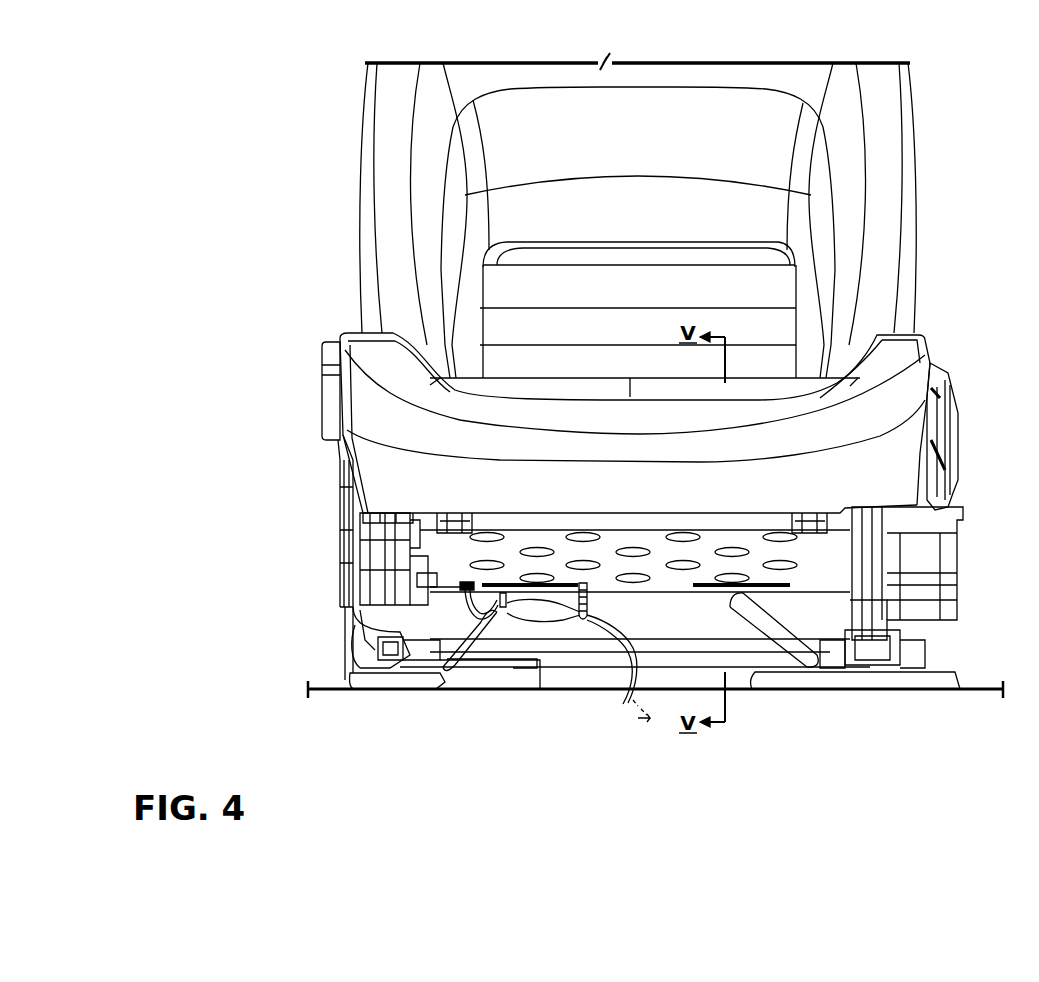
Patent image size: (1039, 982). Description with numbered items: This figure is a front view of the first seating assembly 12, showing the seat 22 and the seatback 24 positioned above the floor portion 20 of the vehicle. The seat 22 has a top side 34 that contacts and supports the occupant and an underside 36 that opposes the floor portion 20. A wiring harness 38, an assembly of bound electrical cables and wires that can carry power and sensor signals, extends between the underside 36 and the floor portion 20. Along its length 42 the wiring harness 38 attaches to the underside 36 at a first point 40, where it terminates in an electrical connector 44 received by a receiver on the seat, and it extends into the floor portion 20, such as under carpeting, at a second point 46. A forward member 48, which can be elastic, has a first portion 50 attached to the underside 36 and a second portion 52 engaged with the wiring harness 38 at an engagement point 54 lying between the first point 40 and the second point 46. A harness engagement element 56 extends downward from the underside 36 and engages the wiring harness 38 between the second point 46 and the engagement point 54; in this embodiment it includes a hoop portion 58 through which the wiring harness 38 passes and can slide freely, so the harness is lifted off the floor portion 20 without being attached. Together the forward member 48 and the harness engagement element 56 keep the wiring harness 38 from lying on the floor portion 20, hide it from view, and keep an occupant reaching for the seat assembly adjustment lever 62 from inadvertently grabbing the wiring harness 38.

The first seating assembly 12 is at (358, 158).
The floor portion 20 is at (328, 688).
The seat 22 is at (885, 358).
The seatback 24 is at (873, 158).
The top side 34 is at (750, 383).
The underside 36 is at (818, 565).
The wiring harness 38 is at (640, 648).
The first point 40 is at (415, 578).
The length 42 is at (593, 622).
The electrical connector 44 is at (460, 586).
The second point 46 is at (622, 703).
The forward member 48 is at (503, 595).
The first portion 50 is at (503, 595).
The second portion 52 is at (512, 596).
The engagement point 54 is at (518, 690).
The harness engagement element 56 is at (584, 583).
The hoop portion 58 is at (614, 605).
The seat assembly adjustment lever 62 is at (683, 597).